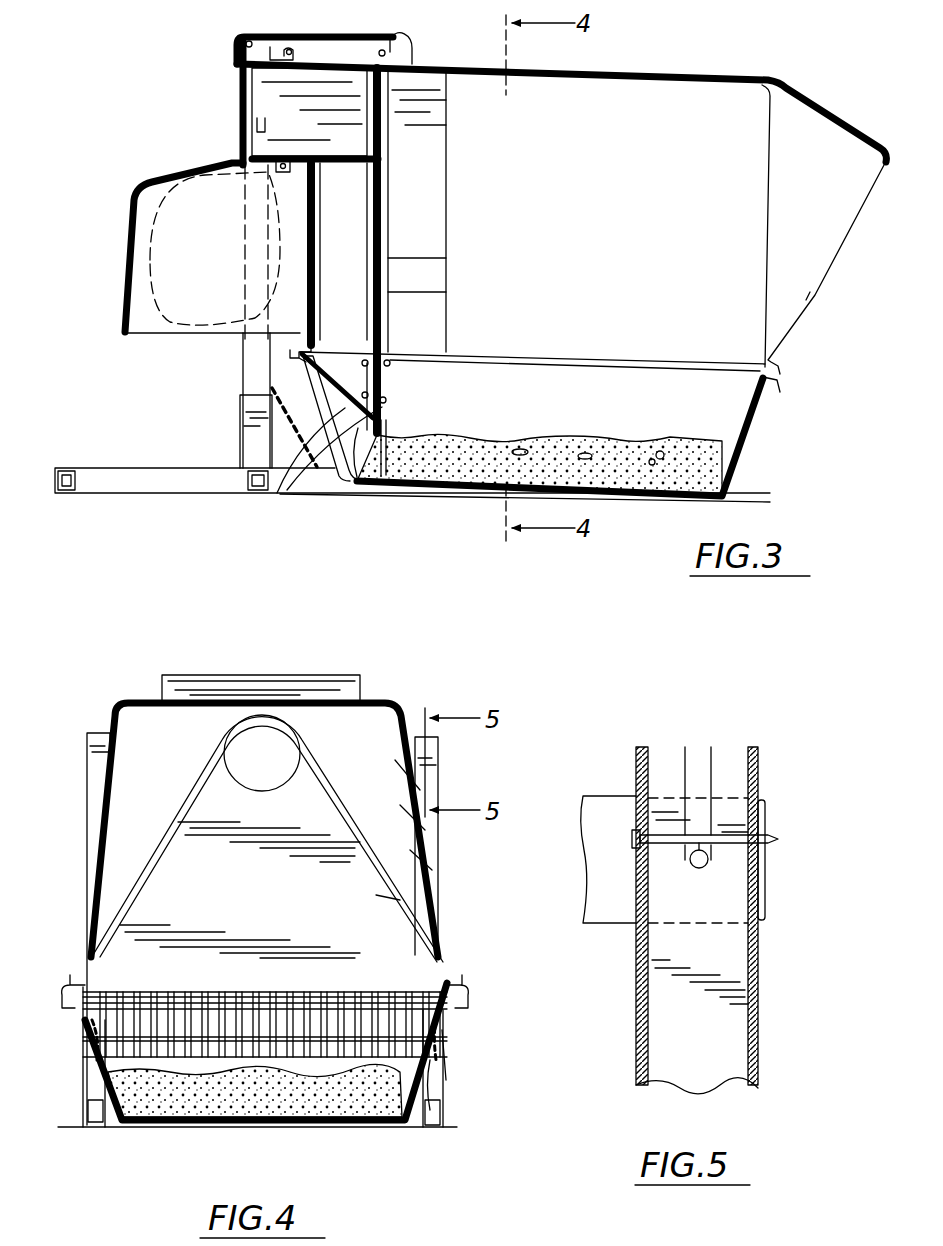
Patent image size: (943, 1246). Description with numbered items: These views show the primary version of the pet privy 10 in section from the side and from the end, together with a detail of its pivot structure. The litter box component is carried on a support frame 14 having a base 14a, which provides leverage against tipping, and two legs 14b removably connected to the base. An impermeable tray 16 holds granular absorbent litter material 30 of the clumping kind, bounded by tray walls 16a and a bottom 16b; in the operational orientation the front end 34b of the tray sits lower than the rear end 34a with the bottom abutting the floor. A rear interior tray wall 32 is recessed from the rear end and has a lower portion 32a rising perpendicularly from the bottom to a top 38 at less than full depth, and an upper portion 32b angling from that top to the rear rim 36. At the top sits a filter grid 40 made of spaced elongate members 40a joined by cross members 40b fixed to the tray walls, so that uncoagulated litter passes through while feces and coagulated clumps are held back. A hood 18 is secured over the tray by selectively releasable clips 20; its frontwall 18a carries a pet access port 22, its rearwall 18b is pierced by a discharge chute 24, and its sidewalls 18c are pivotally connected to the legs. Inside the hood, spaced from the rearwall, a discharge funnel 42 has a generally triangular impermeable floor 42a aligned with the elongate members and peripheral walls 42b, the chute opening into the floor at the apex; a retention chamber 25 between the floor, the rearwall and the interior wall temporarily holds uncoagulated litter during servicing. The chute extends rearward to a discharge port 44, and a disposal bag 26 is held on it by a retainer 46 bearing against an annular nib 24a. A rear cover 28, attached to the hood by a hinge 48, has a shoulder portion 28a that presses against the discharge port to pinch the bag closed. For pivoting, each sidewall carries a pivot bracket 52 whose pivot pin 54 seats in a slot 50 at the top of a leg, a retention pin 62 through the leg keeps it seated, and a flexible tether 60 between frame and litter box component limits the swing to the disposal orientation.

In FIG. 3, the pet privy 10 is at (752, 62).
In FIG. 4, the pet privy 10 is at (450, 690).
In FIG. 3, the support frame 14 is at (183, 464).
In FIG. 3, the base 14a is at (106, 468).
In FIG. 3, the legs 14b is at (242, 372).
In FIG. 4, the legs 14b is at (262, 929).
In FIG. 5, the legs 14b is at (760, 984).
In FIG. 3, the tray 16 is at (740, 445).
In FIG. 4, the tray 16 is at (440, 1103).
In FIG. 3, the tray wall 16a is at (766, 392).
In FIG. 3, the bottom 16b is at (614, 443).
In FIG. 3, the hood 18 is at (657, 72).
In FIG. 4, the hood 18 is at (372, 700).
In FIG. 3, the frontwall 18a is at (770, 226).
In FIG. 3, the rearwall 18b is at (392, 291).
In FIG. 4, the rearwall 18b is at (162, 741).
In FIG. 3, the sidewalls 18c is at (535, 226).
In FIG. 4, the sidewalls 18c is at (440, 855).
In FIG. 4, the selectively releasable clips 20 is at (66, 978).
In FIG. 3, the pet access port 22 is at (812, 295).
In FIG. 3, the discharge chute 24 is at (315, 206).
In FIG. 4, the discharge chute 24 is at (292, 780).
In FIG. 3, the annular nib 24a is at (300, 44).
In FIG. 3, the retention chamber 25 is at (360, 255).
In FIG. 3, the disposal bag 26 is at (150, 282).
In FIG. 3, the rear cover 28 is at (180, 180).
In FIG. 3, the shoulder portion 28a is at (240, 115).
In FIG. 3, the granular absorbent litter material 30 is at (653, 440).
In FIG. 4, the granular absorbent litter material 30 is at (380, 1125).
In FIG. 3, the rear interior tray wall 32 is at (362, 483).
In FIG. 3, the lower portion 32a is at (362, 455).
In FIG. 4, the lower portion 32a is at (430, 1087).
In FIG. 3, the upper portion 32b is at (277, 493).
In FIG. 3, the rear end 34a is at (287, 490).
In FIG. 3, the front end 34b is at (728, 486).
In FIG. 3, the rear rim 36 is at (312, 352).
In FIG. 3, the top 38 is at (386, 420).
In FIG. 4, the top 38 is at (450, 1045).
In FIG. 3, the filter grid 40 is at (395, 372).
In FIG. 4, the filter grid 40 is at (300, 982).
In FIG. 3, the elongate members 40a is at (396, 370).
In FIG. 4, the elongate members 40a is at (149, 994).
In FIG. 3, the cross members 40b is at (392, 390).
In FIG. 4, the cross members 40b is at (232, 985).
In FIG. 3, the discharge funnel 42 is at (455, 218).
In FIG. 4, the discharge funnel 42 is at (348, 790).
In FIG. 3, the floor 42a is at (420, 254).
In FIG. 4, the floor 42a is at (240, 890).
In FIG. 3, the peripheral walls 42b is at (447, 160).
In FIG. 4, the peripheral walls 42b is at (376, 894).
In FIG. 3, the discharge port 44 is at (240, 60).
In FIG. 3, the retainer 46 is at (278, 180).
In FIG. 3, the hinge 48 is at (396, 50).
In FIG. 5, the slot 50 is at (700, 768).
In FIG. 5, the pivot bracket 52 is at (600, 796).
In FIG. 5, the pivot pin 54 is at (765, 840).
In FIG. 3, the flexible tether 60 is at (280, 417).
In FIG. 4, the flexible tether 60 is at (85, 1055).
In FIG. 5, the retention pin 62 is at (708, 858).